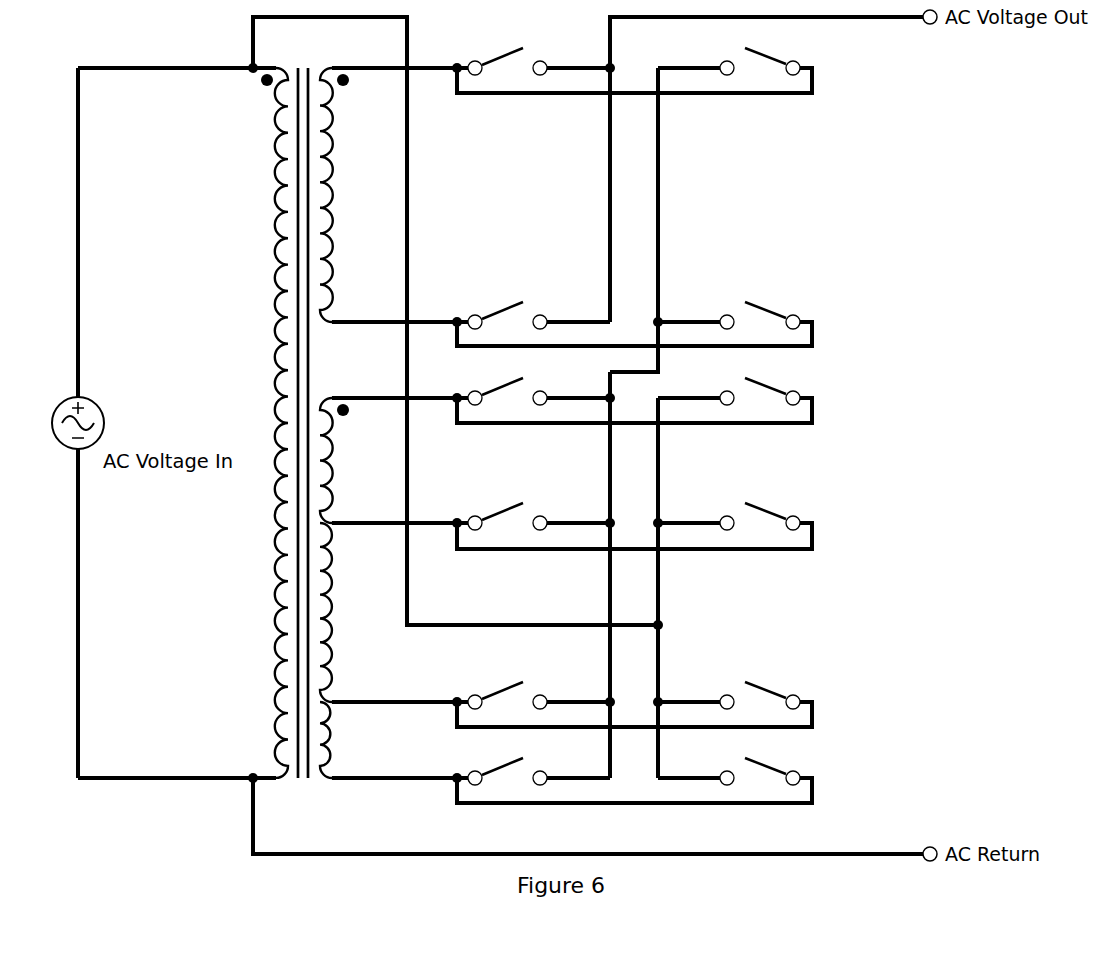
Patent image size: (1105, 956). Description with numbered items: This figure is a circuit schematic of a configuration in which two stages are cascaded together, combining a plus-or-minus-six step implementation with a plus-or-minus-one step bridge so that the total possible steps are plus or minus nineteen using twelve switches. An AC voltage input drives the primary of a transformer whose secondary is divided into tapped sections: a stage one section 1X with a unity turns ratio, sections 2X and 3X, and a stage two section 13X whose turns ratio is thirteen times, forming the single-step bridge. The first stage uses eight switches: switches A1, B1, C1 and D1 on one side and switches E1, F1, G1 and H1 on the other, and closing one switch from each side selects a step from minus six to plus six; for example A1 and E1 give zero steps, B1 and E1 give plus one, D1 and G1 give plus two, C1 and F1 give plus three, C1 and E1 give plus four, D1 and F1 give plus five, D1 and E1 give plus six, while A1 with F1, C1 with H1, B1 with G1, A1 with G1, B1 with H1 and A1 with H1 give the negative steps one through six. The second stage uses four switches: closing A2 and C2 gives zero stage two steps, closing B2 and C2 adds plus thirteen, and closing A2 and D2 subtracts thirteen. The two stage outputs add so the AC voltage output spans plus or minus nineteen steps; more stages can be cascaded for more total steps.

The stage two winding section 13X is at (357, 195).
The two-times winding section 2X is at (351, 460).
The three-times winding section 3X is at (351, 612).
The stage one winding section 1X is at (351, 740).
The switch B2 is at (533, 50).
The switch D2 is at (735, 50).
The switch A2 is at (533, 304).
The switch C2 is at (735, 304).
The switch D1 is at (533, 380).
The switch H1 is at (735, 380).
The switch C1 is at (533, 505).
The switch G1 is at (735, 505).
The switch B1 is at (533, 684).
The switch F1 is at (735, 684).
The switch A1 is at (533, 760).
The switch E1 is at (735, 760).